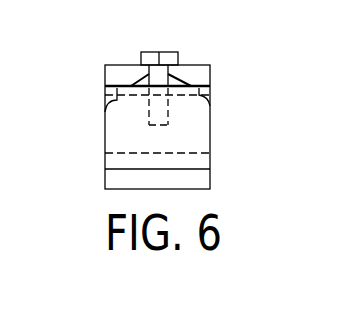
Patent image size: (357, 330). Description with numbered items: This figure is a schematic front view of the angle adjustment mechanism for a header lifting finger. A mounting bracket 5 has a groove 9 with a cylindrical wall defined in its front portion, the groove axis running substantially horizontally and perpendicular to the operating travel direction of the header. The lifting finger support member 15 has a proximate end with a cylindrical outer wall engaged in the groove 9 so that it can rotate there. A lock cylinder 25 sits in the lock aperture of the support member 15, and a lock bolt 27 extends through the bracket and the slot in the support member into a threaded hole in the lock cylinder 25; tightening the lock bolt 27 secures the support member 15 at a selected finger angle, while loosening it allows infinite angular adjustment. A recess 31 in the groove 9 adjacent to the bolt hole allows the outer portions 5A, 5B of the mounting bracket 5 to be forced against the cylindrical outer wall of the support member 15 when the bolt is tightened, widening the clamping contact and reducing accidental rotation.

The mounting bracket 5 is at (115, 65).
The lock bolt 27 is at (165, 53).
The recess 31 is at (178, 74).
The groove 9 is at (210, 90).
The outer portion of mounting bracket 5A is at (105, 112).
The outer portion of mounting bracket 5B is at (210, 106).
The lock cylinder 25 is at (210, 133).
The lifting finger support member 15 is at (210, 180).